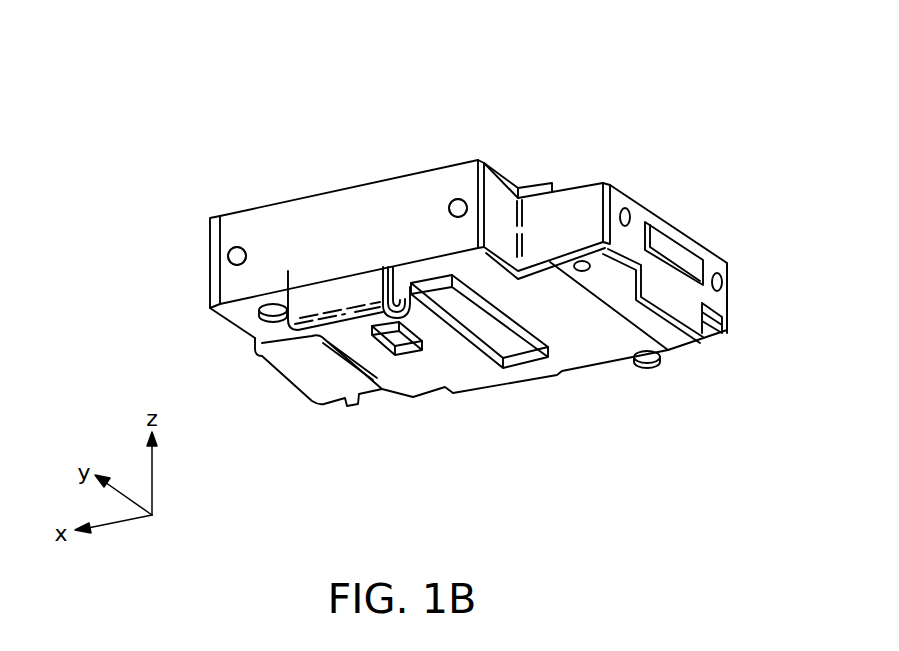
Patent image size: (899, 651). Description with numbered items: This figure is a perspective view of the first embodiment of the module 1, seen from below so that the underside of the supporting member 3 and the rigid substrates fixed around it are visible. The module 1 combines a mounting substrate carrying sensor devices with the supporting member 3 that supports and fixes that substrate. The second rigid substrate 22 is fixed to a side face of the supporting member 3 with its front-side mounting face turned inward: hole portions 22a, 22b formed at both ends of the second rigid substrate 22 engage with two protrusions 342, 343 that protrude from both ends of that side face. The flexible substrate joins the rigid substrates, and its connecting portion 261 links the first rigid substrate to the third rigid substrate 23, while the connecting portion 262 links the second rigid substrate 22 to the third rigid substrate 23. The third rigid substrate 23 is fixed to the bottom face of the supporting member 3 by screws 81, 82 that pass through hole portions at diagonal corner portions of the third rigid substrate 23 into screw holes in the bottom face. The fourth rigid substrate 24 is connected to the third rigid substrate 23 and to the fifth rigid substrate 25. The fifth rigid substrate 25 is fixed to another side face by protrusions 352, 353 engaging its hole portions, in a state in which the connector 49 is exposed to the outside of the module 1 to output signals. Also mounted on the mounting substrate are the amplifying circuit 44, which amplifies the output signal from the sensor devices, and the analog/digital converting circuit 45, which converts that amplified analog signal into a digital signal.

The module 1 is at (647, 93).
The second rigid substrate 22 is at (303, 213).
The hole portion 22a is at (447, 207).
The hole portion 22b is at (246, 254).
The protrusion 342 is at (458, 199).
The protrusion 343 is at (236, 247).
The connecting portion 261 is at (355, 293).
The connecting portion 262 is at (323, 383).
The third rigid substrate 23 is at (583, 357).
The screw 82 is at (273, 318).
The screw 81 is at (651, 364).
The amplifying circuit 44 is at (400, 347).
The analog/digital converting circuit 45 is at (497, 347).
The supporting member 3 is at (573, 184).
The fourth rigid substrate 24 is at (537, 187).
The fifth rigid substrate 25 is at (645, 217).
The protrusion 353 is at (625, 207).
The protrusion 352 is at (723, 279).
The connector 49 is at (678, 253).